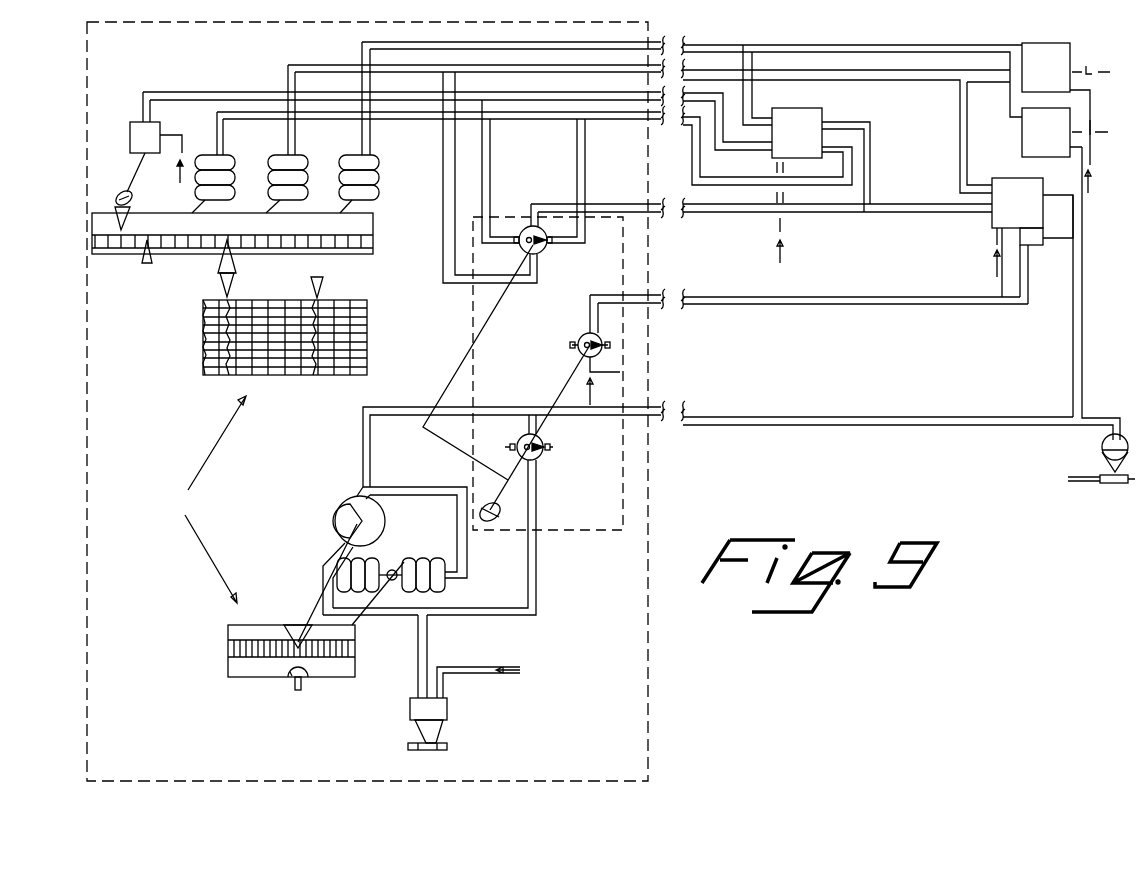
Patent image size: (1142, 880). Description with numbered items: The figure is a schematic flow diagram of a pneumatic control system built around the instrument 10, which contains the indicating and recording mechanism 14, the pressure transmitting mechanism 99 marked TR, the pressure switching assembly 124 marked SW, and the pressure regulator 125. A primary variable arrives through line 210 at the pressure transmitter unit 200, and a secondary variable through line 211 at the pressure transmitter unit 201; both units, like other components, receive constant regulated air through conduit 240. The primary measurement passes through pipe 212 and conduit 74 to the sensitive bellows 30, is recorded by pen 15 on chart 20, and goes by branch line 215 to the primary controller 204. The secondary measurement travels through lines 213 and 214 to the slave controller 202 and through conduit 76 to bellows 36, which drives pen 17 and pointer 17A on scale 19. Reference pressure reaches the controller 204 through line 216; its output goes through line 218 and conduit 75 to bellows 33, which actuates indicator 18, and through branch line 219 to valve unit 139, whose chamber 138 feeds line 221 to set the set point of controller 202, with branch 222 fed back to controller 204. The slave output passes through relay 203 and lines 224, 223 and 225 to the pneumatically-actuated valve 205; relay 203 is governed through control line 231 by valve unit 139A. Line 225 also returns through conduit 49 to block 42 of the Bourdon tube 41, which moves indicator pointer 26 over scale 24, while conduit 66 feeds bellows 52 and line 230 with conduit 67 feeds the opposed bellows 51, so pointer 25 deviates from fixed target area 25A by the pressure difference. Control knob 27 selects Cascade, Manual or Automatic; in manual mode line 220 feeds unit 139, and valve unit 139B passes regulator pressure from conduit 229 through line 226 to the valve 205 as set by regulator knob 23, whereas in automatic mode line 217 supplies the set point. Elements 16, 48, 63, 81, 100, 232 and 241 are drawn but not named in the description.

The instrument 10 is at (632, 648).
The indicating and recording mechanism 14 is at (206, 499).
The pen 15 is at (323, 285).
The pointer 16 is at (131, 208).
The pen 17 is at (232, 283).
The pointer 17A is at (218, 258).
The indicator 18 is at (141, 262).
The scale 19 is at (374, 228).
The chart 20 is at (302, 337).
The regulator knob 23 is at (450, 746).
The scale 24 is at (228, 633).
The pointer 25 is at (303, 684).
The fixed target area 25A is at (290, 673).
The indicator pointer 26 is at (291, 625).
The control knob 27 is at (489, 525).
The sensitive bellows 30 is at (370, 155).
The bellows 33 is at (224, 155).
The bellows 36 is at (297, 155).
The Bourdon tube 41 is at (335, 520).
The block 42 is at (358, 483).
The conduit 48 is at (333, 550).
The conduit 49 is at (364, 424).
The opposed bellows 51 is at (368, 560).
The pressure-sensitive bellows 52 is at (424, 560).
The link 63 is at (356, 618).
The conduit 66 is at (414, 487).
The conduit 67 is at (383, 612).
The conduit 74 is at (360, 46).
The conduit 75 is at (216, 126).
The conduit 76 is at (286, 70).
The pivot 81 is at (117, 193).
The pressure transmitting mechanism 99 is at (139, 110).
The transmitter 100 is at (124, 106).
The pressure switching assembly 124 is at (607, 493).
The pressure regulator 125 is at (448, 712).
The chamber 138 is at (530, 227).
The valve unit 139 is at (547, 246).
The valve unit 139A is at (578, 352).
The valve unit 139B is at (542, 460).
The pressure transmitter unit 200 is at (1022, 46).
The pressure transmitter unit 201 is at (1020, 126).
The slave controller 202 is at (992, 220).
The on-off relay 203 is at (1022, 243).
The primary controller 204 is at (797, 110).
The pneumatically-actuated valve 205 is at (1102, 446).
The line 210 is at (1091, 60).
The line 211 is at (1096, 118).
The pipe 212 is at (833, 46).
The line 213 is at (969, 85).
The line 214 is at (960, 157).
The branch line 215 is at (754, 96).
The line 216 is at (167, 91).
The line 217 is at (492, 152).
The line 218 is at (715, 180).
The branch line 219 is at (586, 153).
The line 220 is at (442, 178).
The line 221 is at (688, 213).
The branch 222 is at (872, 138).
The line 223 is at (1072, 363).
The line 224 is at (1056, 246).
The line 225 is at (735, 415).
The line 226 is at (545, 428).
The conduit 229 is at (538, 578).
The line 230 is at (429, 627).
The control line 231 is at (746, 301).
The valve port 232 is at (509, 443).
The conduit 240 is at (175, 150).
The valve port 241 is at (568, 340).